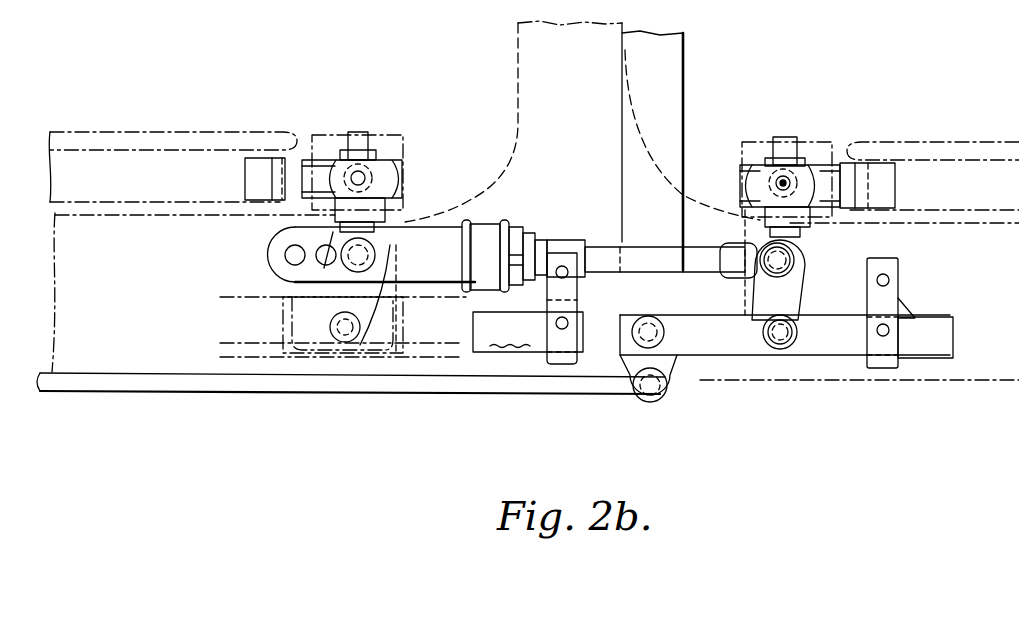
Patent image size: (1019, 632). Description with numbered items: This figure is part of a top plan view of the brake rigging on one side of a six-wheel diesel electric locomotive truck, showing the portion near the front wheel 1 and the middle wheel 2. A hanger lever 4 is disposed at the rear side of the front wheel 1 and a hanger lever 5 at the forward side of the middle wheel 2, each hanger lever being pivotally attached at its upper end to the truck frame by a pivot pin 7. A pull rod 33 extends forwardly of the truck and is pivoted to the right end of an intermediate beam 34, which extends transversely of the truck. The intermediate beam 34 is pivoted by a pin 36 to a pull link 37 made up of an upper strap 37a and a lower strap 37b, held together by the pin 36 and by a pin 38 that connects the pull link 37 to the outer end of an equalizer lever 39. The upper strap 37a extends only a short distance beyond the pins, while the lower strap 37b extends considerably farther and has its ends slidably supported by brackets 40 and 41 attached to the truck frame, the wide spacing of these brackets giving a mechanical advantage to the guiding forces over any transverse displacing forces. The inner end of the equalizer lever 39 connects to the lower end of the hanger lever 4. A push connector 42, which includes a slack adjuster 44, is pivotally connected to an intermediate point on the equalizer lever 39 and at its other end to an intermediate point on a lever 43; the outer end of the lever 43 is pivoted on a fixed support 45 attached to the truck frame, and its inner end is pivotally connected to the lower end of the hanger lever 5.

The front wheel 1 is at (964, 150).
The middle wheel 2 is at (172, 136).
The hanger lever 4 is at (745, 182).
The hanger lever 5 is at (400, 180).
The pivot pin 7 is at (360, 140).
The pull rod 33 is at (238, 384).
The intermediate beam 34 is at (675, 81).
The pin 36 is at (665, 320).
The pull link 37 is at (776, 394).
The upper strap 37a is at (728, 343).
The lower strap 37b is at (955, 337).
The pin 38 is at (800, 325).
The equalizer lever 39 is at (795, 288).
The bracket 40 is at (572, 295).
The bracket 41 is at (905, 305).
The push connector 42 is at (693, 257).
The lever 43 is at (335, 290).
The slack adjuster 44 is at (510, 232).
The fixed support 45 is at (403, 323).